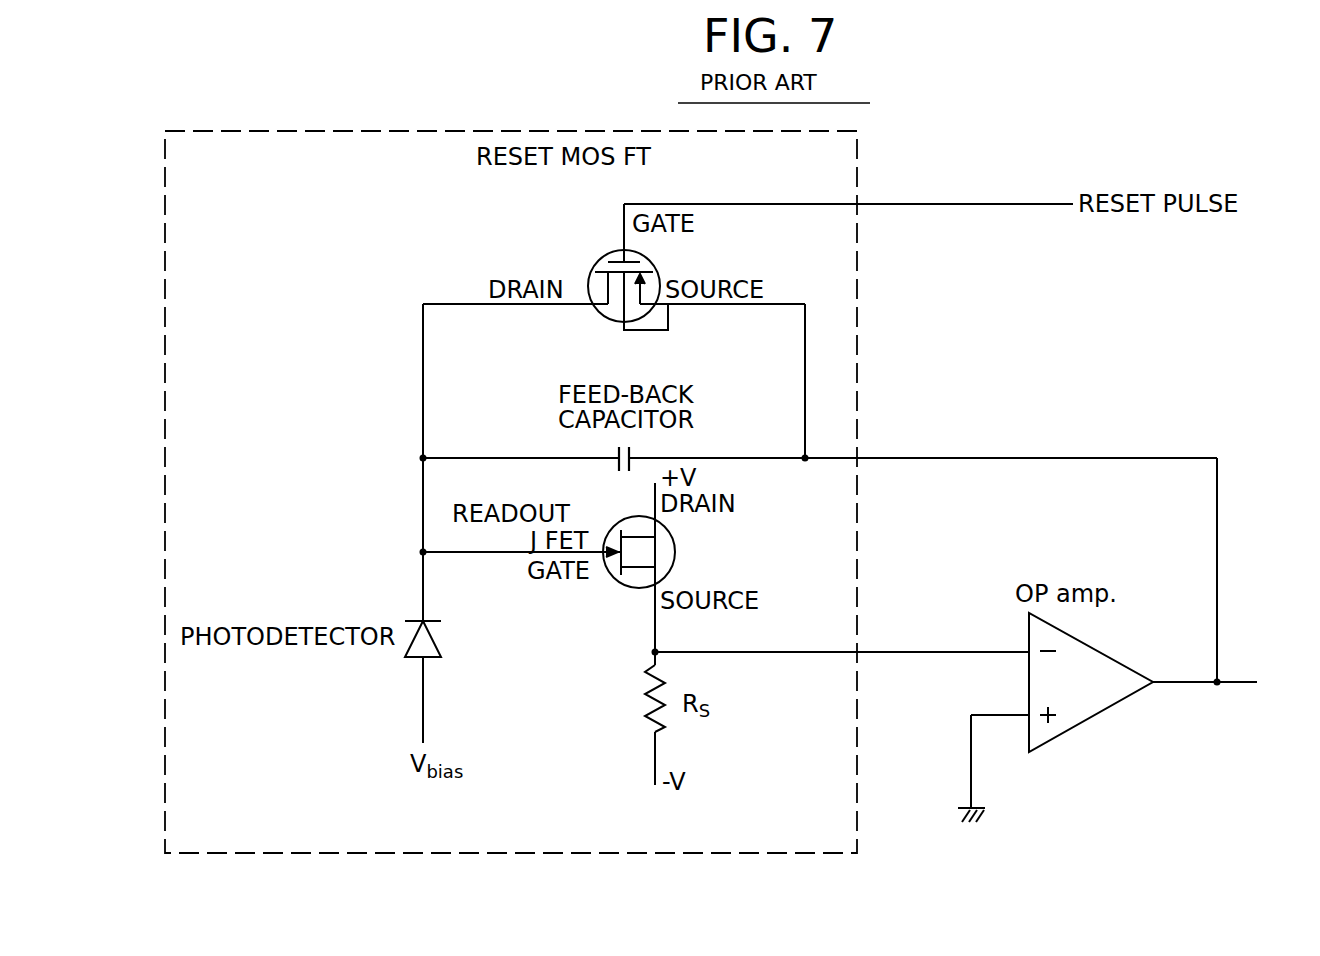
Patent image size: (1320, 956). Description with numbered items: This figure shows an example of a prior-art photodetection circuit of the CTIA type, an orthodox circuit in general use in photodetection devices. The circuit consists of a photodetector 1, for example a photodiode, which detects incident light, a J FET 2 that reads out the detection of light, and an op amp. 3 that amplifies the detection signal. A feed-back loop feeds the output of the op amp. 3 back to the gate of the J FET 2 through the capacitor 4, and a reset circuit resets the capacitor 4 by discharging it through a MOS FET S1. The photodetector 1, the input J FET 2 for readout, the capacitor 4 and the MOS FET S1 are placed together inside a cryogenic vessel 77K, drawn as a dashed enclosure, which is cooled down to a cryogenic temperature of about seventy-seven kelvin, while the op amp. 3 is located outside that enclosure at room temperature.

The photodetector 1 is at (441, 640).
The J FET 2 is at (677, 550).
The op amp. 3 is at (1118, 660).
The capacitor 4 is at (622, 467).
The MOS FET S1 is at (660, 250).
The cryogenic vessel 77K is at (511, 492).